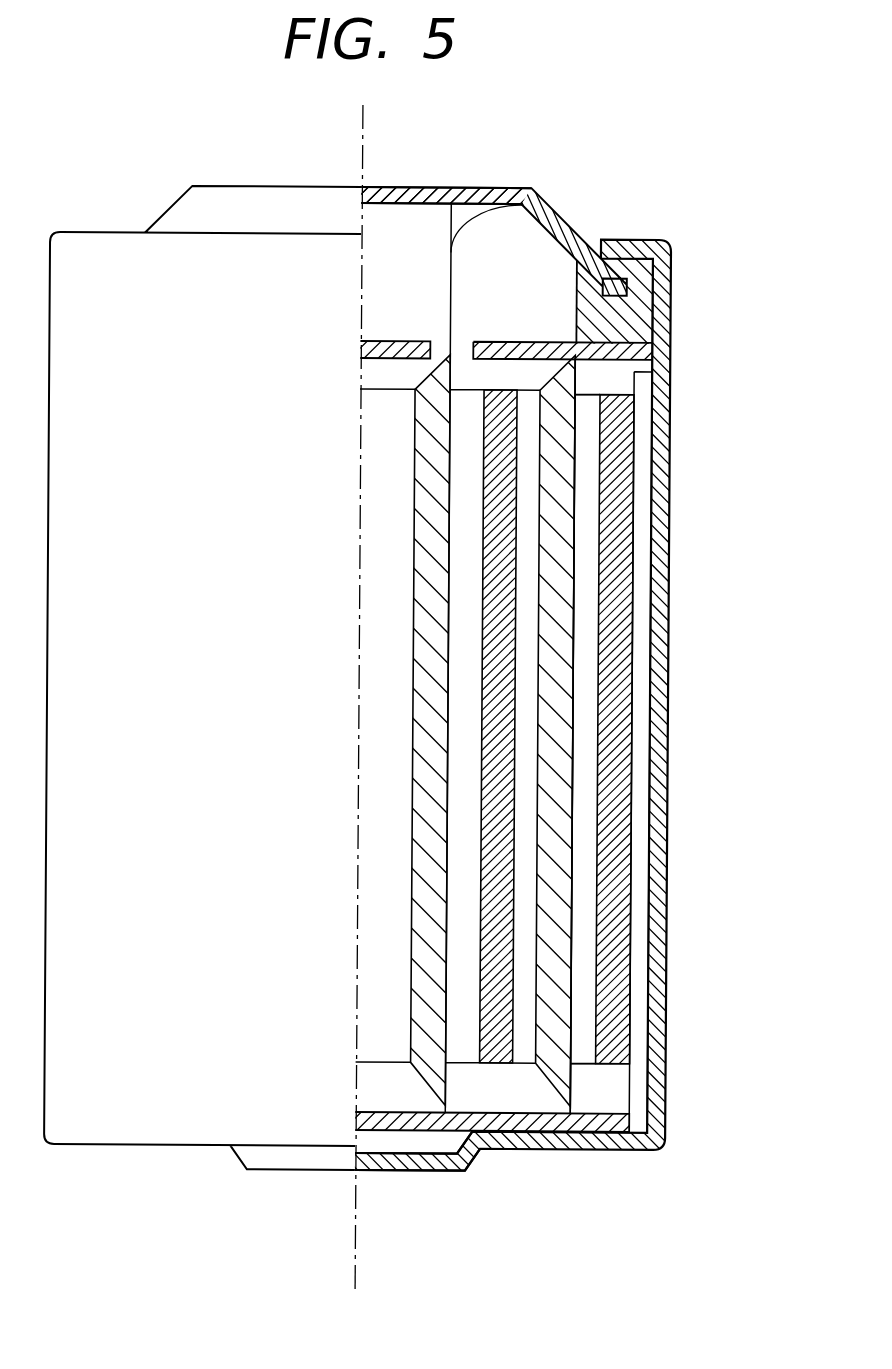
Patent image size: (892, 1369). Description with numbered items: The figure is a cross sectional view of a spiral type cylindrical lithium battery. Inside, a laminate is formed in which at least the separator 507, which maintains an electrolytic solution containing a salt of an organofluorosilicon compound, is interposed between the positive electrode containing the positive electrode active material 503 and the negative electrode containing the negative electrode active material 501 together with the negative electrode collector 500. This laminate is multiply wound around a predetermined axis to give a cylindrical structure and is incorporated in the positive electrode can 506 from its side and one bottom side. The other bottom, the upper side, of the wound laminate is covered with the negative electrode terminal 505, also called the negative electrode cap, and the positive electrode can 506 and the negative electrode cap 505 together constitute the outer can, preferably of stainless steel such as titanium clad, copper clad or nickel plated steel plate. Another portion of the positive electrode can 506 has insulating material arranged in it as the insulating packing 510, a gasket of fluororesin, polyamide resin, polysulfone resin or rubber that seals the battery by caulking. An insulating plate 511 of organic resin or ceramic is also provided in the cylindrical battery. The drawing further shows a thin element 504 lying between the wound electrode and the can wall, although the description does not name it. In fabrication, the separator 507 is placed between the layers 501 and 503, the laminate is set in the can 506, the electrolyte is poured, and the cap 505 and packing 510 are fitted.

The negative electrode collector 500 is at (527, 187).
The negative electrode terminal 505 is at (472, 187).
The insulating packing 510 is at (644, 310).
The insulating plate 511 is at (640, 355).
The negative electrode active material 501 is at (561, 515).
The separator 507 is at (587, 590).
The positive electrode active material 503 is at (620, 857).
The separator 504 is at (643, 732).
The positive electrode can 506 is at (441, 1165).